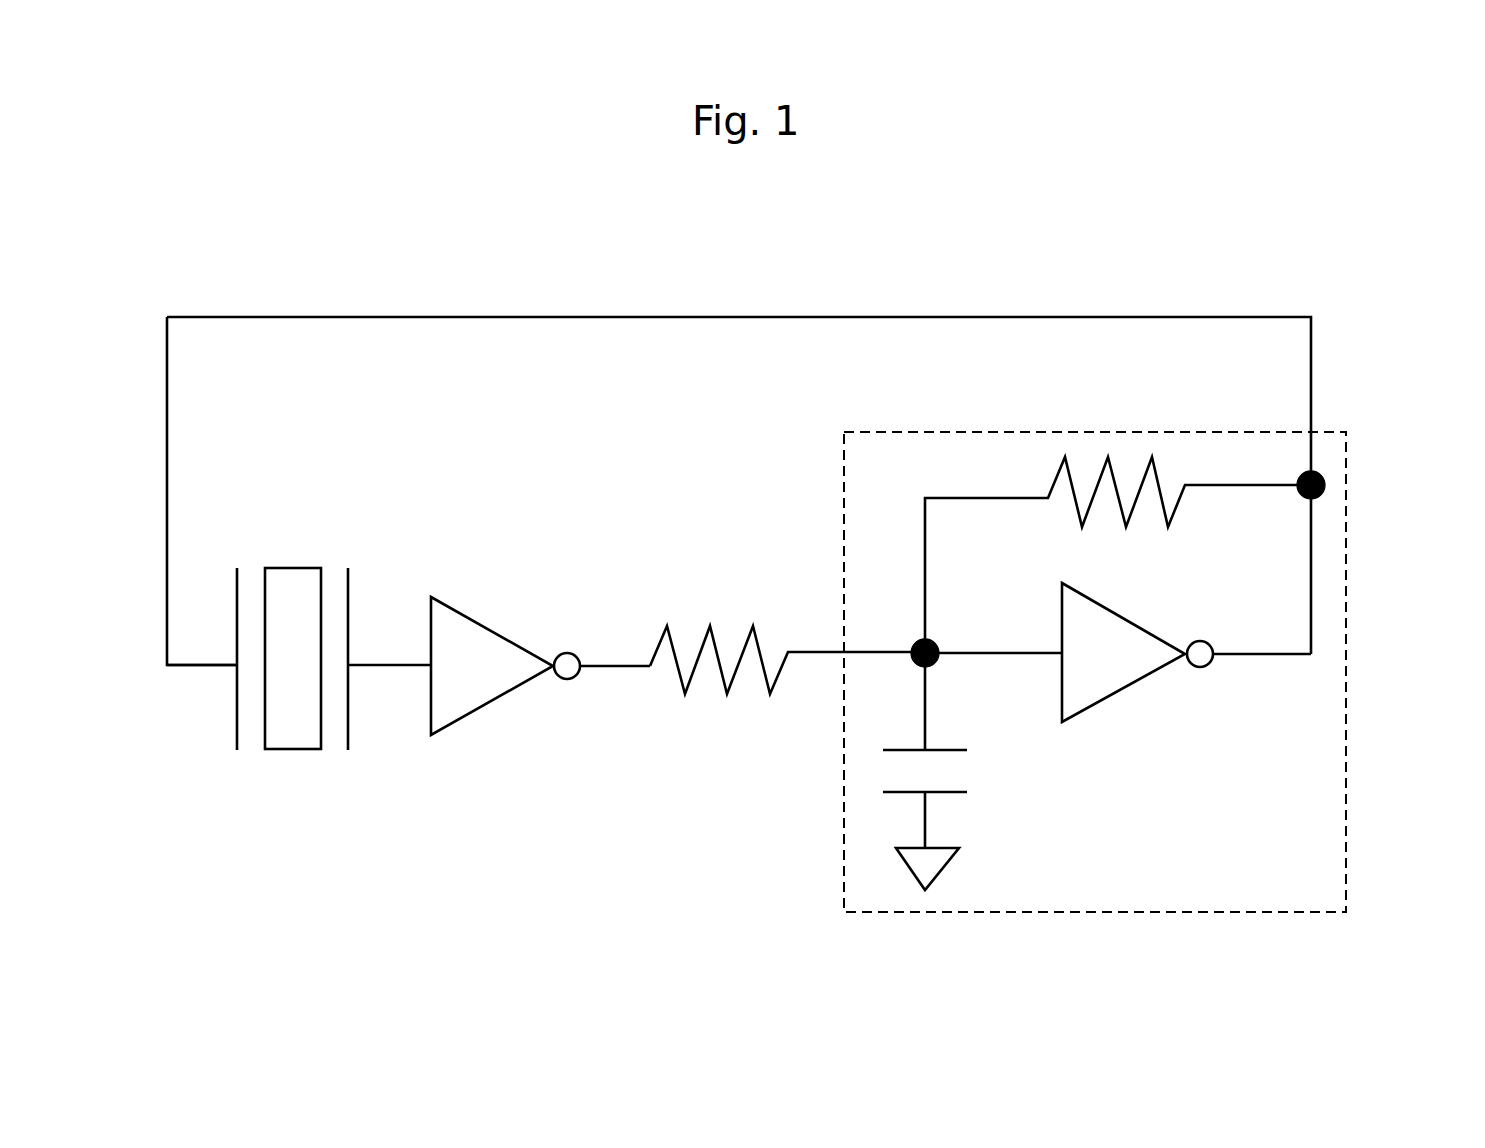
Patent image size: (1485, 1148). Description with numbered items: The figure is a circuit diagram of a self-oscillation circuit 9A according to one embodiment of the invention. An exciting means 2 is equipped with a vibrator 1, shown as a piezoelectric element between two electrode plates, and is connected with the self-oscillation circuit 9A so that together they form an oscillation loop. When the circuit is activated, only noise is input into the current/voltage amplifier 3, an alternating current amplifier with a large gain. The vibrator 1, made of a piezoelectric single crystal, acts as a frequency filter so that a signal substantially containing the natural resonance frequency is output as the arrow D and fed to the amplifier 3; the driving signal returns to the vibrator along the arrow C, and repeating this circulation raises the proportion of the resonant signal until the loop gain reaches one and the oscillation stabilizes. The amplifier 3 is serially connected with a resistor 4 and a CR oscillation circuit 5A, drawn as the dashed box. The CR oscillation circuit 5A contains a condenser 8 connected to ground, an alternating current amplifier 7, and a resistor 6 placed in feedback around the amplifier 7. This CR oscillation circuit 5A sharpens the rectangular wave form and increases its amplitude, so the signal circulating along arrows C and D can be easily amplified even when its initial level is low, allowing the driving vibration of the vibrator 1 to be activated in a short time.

The vibrator 1 is at (288, 575).
The exciting means 2 is at (237, 600).
The current/voltage amplifier 3 is at (505, 628).
The resistor 4 is at (672, 640).
The CR oscillation circuit 5A is at (1346, 520).
The resistor 6 is at (1112, 470).
The alternating current amplifier 7 is at (1130, 645).
The condenser 8 is at (945, 750).
The self-oscillation circuit 9A is at (1330, 305).
The driving signal arrow C is at (204, 665).
The output signal arrow D is at (395, 665).